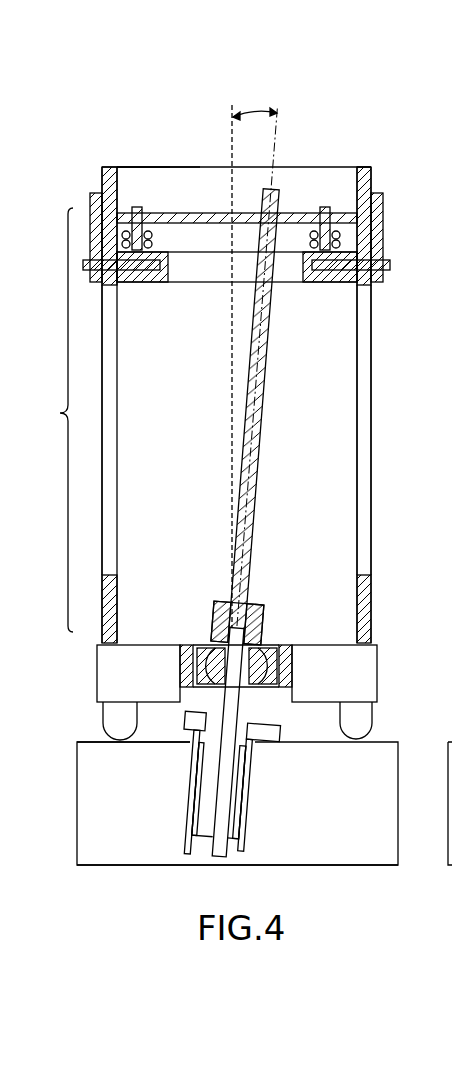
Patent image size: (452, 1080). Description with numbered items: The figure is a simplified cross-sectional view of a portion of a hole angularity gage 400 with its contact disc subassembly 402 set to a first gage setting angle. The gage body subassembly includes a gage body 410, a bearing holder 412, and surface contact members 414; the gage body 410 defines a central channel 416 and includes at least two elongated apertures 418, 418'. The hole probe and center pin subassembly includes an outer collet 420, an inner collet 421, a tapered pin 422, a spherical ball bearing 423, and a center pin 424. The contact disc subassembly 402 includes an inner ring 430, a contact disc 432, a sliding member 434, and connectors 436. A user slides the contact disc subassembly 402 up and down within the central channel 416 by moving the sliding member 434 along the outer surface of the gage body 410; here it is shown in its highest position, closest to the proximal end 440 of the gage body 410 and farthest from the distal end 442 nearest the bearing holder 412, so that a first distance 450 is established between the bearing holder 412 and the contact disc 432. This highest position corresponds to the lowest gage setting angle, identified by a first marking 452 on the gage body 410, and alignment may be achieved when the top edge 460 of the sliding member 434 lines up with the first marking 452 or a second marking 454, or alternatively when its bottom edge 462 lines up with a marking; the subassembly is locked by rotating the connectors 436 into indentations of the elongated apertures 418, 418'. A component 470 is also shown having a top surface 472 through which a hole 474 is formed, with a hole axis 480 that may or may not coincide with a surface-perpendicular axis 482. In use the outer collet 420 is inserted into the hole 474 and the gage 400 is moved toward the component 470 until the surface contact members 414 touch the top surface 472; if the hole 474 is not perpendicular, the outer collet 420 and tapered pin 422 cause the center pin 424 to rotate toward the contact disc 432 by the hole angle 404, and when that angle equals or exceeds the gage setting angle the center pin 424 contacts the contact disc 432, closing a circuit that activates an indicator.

The hole angularity gage 400 is at (150, 95).
The contact disc subassembly 402 is at (402, 160).
The hole angle 404 is at (256, 111).
The gage body 410 is at (372, 585).
The bearing holder 412 is at (372, 688).
The surface contact members 414 is at (112, 718).
The central channel 416 is at (153, 157).
The elongated apertures 418 is at (258, 405).
The inner wall 418' is at (404, 487).
The outer collet 420 is at (258, 755).
The inner collet 421 is at (256, 848).
The tapered pin 422 is at (200, 752).
The spherical ball bearing 423 is at (262, 640).
The center pin 424 is at (267, 382).
The inner ring 430 is at (140, 285).
The contact disc 432 is at (170, 213).
The sliding member 434 is at (380, 207).
The connectors 436 is at (82, 270).
The proximal end 440 is at (368, 167).
The distal end 442 is at (377, 657).
The first distance 450 is at (60, 413).
The first marking 452 is at (100, 172).
The second marking 454 is at (96, 385).
The top edge 460 is at (90, 200).
The bottom edge 462 is at (100, 283).
The component 470 is at (358, 855).
The top surface 472 is at (77, 745).
The hole 474 is at (200, 866).
The hole axis 480 is at (281, 123).
The surface-perpendicular axis 482 is at (224, 117).